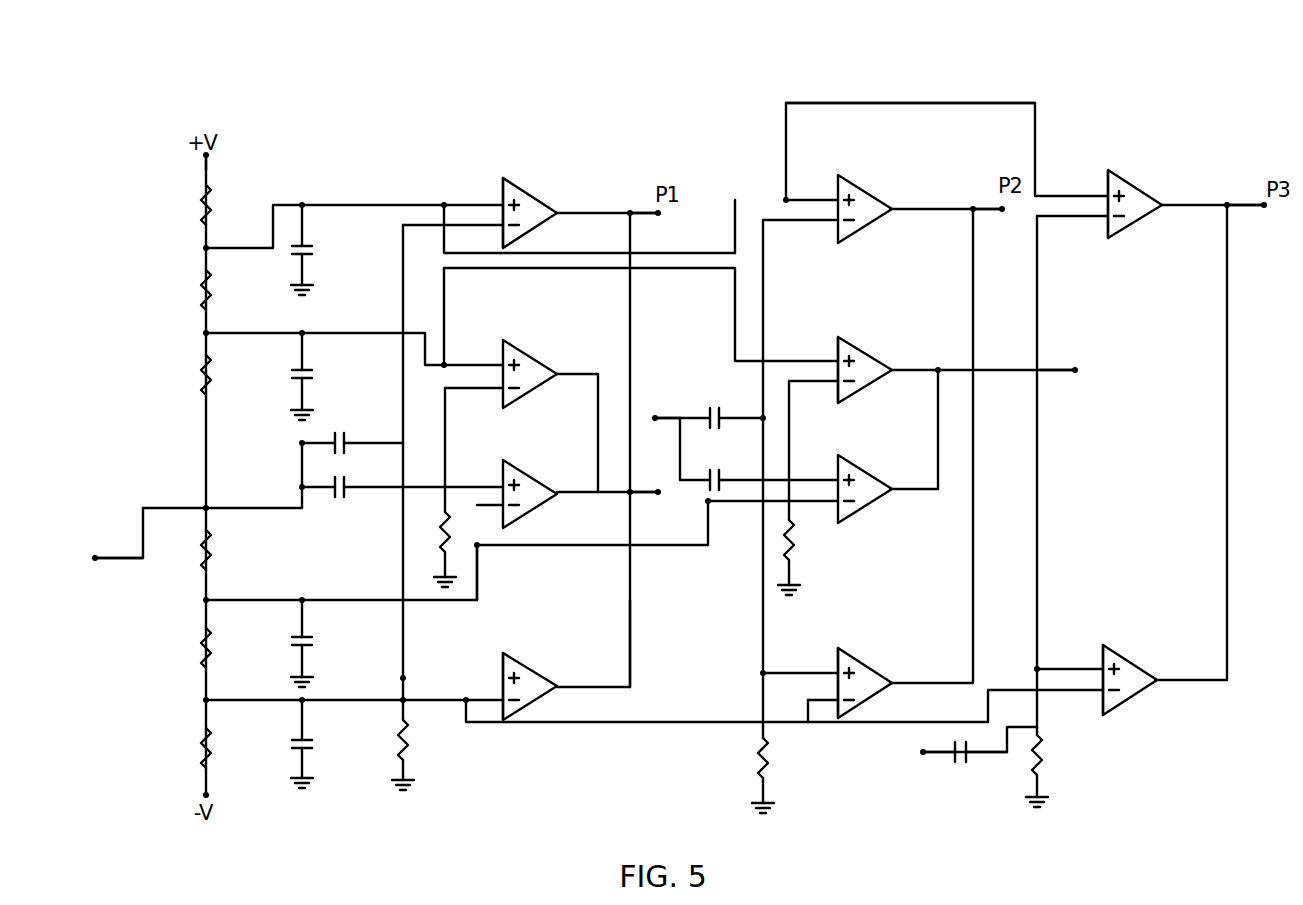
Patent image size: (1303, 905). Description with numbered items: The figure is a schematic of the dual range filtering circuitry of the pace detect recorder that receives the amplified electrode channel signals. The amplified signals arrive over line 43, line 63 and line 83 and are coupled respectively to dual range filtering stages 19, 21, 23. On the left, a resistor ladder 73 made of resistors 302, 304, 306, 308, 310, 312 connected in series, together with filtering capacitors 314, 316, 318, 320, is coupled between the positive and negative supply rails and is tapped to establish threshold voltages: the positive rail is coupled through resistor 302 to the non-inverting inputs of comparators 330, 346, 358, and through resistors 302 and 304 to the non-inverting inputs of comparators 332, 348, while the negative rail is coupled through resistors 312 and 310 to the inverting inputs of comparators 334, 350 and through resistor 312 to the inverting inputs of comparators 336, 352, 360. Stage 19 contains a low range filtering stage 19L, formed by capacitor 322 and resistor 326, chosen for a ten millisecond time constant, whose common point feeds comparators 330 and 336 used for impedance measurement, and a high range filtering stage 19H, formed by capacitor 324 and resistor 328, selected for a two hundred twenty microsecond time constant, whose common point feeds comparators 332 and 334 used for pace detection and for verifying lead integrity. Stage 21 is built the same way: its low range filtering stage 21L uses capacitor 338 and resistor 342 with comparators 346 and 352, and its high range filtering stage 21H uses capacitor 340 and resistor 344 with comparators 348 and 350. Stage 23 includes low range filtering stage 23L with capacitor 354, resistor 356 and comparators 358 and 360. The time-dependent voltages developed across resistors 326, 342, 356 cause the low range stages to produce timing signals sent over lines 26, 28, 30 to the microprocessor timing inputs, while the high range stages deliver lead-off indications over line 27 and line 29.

The resistor 302 is at (200, 212).
The resistor 304 is at (200, 303).
The resistor 306 is at (198, 390).
The resistor 308 is at (213, 563).
The resistor 310 is at (198, 652).
The resistor 312 is at (203, 760).
The filtering capacitor 314 is at (312, 256).
The filtering capacitor 316 is at (312, 378).
The filtering capacitor 318 is at (315, 647).
The filtering capacitor 320 is at (293, 742).
The capacitor 322 is at (348, 441).
The capacitor 324 is at (348, 492).
The resistor 326 is at (398, 768).
The resistor 328 is at (440, 548).
The comparator 330 is at (497, 188).
The comparator 332 is at (530, 362).
The comparator 334 is at (528, 478).
The comparator 336 is at (528, 662).
The capacitor 338 is at (718, 411).
The capacitor 340 is at (712, 472).
The resistor 342 is at (765, 755).
The resistor 344 is at (792, 543).
The comparator 346 is at (880, 200).
The comparator 348 is at (880, 352).
The comparator 350 is at (880, 478).
The comparator 352 is at (877, 673).
The capacitor 354 is at (962, 765).
The resistor 356 is at (1043, 759).
The comparator 358 is at (1120, 190).
The comparator 360 is at (1137, 668).
The resistor ladder 73 is at (255, 133).
The dual range filtering stage 19 is at (552, 162).
The line 26 is at (643, 190).
The high range filtering stage 21H is at (852, 335).
The dual range filtering stage 21 is at (870, 92).
The line 63 is at (663, 413).
The line 27 is at (658, 493).
The line 28 is at (980, 205).
The line 29 is at (1075, 373).
The dual range filtering stage 23 is at (1163, 135).
The line 30 is at (1248, 202).
The low range filtering stage 23L is at (1143, 700).
The low range filtering stage 19L is at (547, 708).
The high range filtering stage 19H is at (560, 517).
The low range filtering stage 21L is at (862, 708).
The line 83 is at (923, 755).
The line 43 is at (125, 562).